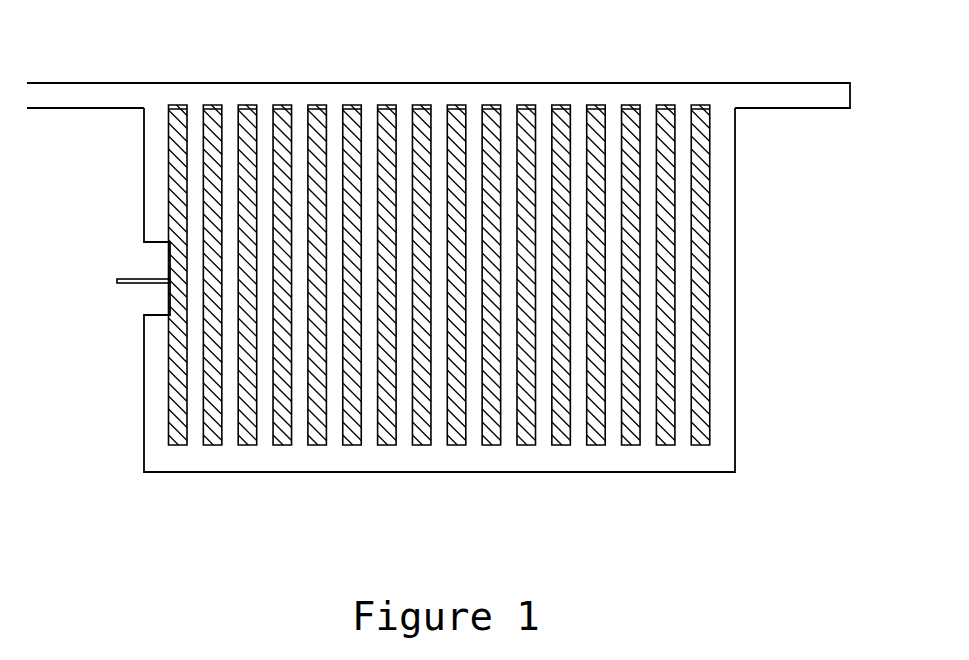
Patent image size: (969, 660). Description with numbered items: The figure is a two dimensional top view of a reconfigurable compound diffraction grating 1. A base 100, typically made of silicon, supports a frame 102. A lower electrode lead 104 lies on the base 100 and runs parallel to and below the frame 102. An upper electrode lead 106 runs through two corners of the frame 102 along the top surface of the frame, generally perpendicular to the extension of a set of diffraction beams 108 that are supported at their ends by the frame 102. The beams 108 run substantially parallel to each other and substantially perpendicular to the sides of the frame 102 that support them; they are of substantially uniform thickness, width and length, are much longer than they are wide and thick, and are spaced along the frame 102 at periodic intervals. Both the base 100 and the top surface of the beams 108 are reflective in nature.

The reconfigurable compound diffraction grating 1 is at (438, 281).
The base 100 is at (217, 437).
The frame 102 is at (155, 460).
The lower electrode lead 104 is at (142, 278).
The upper electrode lead 106 is at (93, 95).
The set of diffraction beams 108 is at (680, 272).